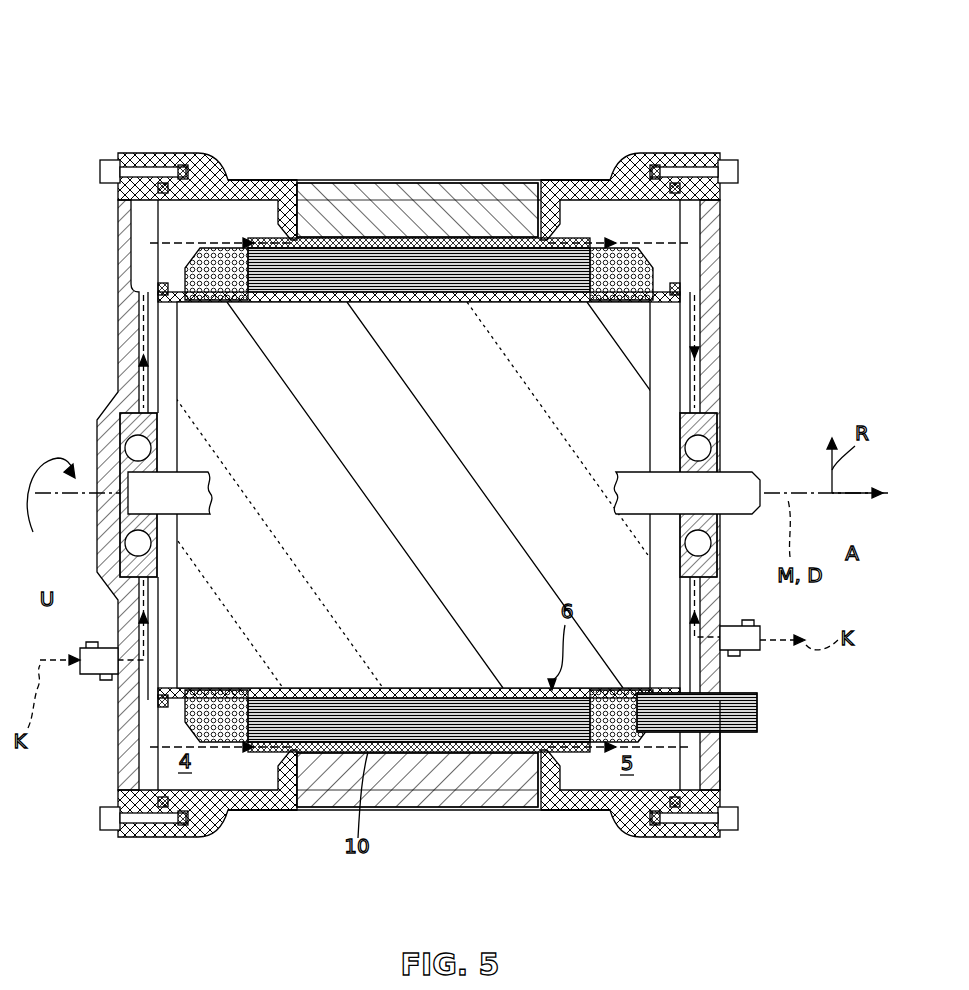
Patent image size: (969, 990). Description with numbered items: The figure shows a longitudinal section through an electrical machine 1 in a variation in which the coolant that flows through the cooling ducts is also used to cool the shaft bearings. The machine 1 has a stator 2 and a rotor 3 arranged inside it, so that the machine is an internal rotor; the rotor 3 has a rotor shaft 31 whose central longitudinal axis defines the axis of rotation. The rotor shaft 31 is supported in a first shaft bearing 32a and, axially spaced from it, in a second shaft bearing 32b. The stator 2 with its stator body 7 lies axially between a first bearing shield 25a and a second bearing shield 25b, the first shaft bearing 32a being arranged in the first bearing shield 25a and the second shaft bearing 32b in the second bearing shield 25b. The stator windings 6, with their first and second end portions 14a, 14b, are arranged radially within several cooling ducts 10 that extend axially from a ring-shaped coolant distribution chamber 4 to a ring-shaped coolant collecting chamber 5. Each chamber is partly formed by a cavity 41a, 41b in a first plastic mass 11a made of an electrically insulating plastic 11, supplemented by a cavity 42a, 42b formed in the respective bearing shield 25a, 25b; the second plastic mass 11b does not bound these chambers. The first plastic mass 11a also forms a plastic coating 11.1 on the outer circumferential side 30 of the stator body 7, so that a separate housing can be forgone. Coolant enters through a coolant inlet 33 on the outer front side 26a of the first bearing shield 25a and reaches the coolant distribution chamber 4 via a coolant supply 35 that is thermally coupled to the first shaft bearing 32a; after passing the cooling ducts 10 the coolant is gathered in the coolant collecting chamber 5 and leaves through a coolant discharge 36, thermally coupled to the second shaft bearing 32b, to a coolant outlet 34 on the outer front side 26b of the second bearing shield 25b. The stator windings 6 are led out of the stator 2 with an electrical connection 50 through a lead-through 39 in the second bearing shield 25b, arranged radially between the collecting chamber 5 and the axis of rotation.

The electrical machine 1 is at (833, 142).
The stator 2 is at (498, 174).
The rotor 3 is at (399, 460).
The coolant distribution chamber 4 is at (183, 229).
The coolant collecting chamber 5 is at (640, 229).
The stator winding 6 is at (456, 311).
The stator body 7 is at (410, 174).
The cooling duct 10 is at (320, 238).
The electrically insulating plastic 11 is at (578, 174).
The first plastic mass 11a is at (429, 236).
The second plastic mass 11b is at (572, 311).
The plastic coating 11.1 is at (458, 180).
The first end portion 14a is at (185, 267).
The second end portion 14b is at (654, 267).
The first bearing shield 25a is at (112, 340).
The second bearing shield 25b is at (728, 340).
The outer front side 26a is at (118, 378).
The outer front side 26b is at (722, 378).
The outer circumferential side 30 is at (385, 180).
The rotor shaft 31 is at (732, 516).
The first shaft bearing 32a is at (122, 430).
The second shaft bearing 32b is at (718, 430).
The coolant inlet 33 is at (97, 680).
The coolant outlet 34 is at (740, 652).
The coolant supply 35 is at (158, 291).
The coolant discharge 36 is at (681, 291).
The lead-through 39 is at (722, 732).
The first cavity 41a is at (228, 222).
The second cavity 41b is at (624, 208).
The cavity 42a is at (143, 231).
The cavity 42b is at (702, 231).
The electrical connection 50 is at (758, 712).